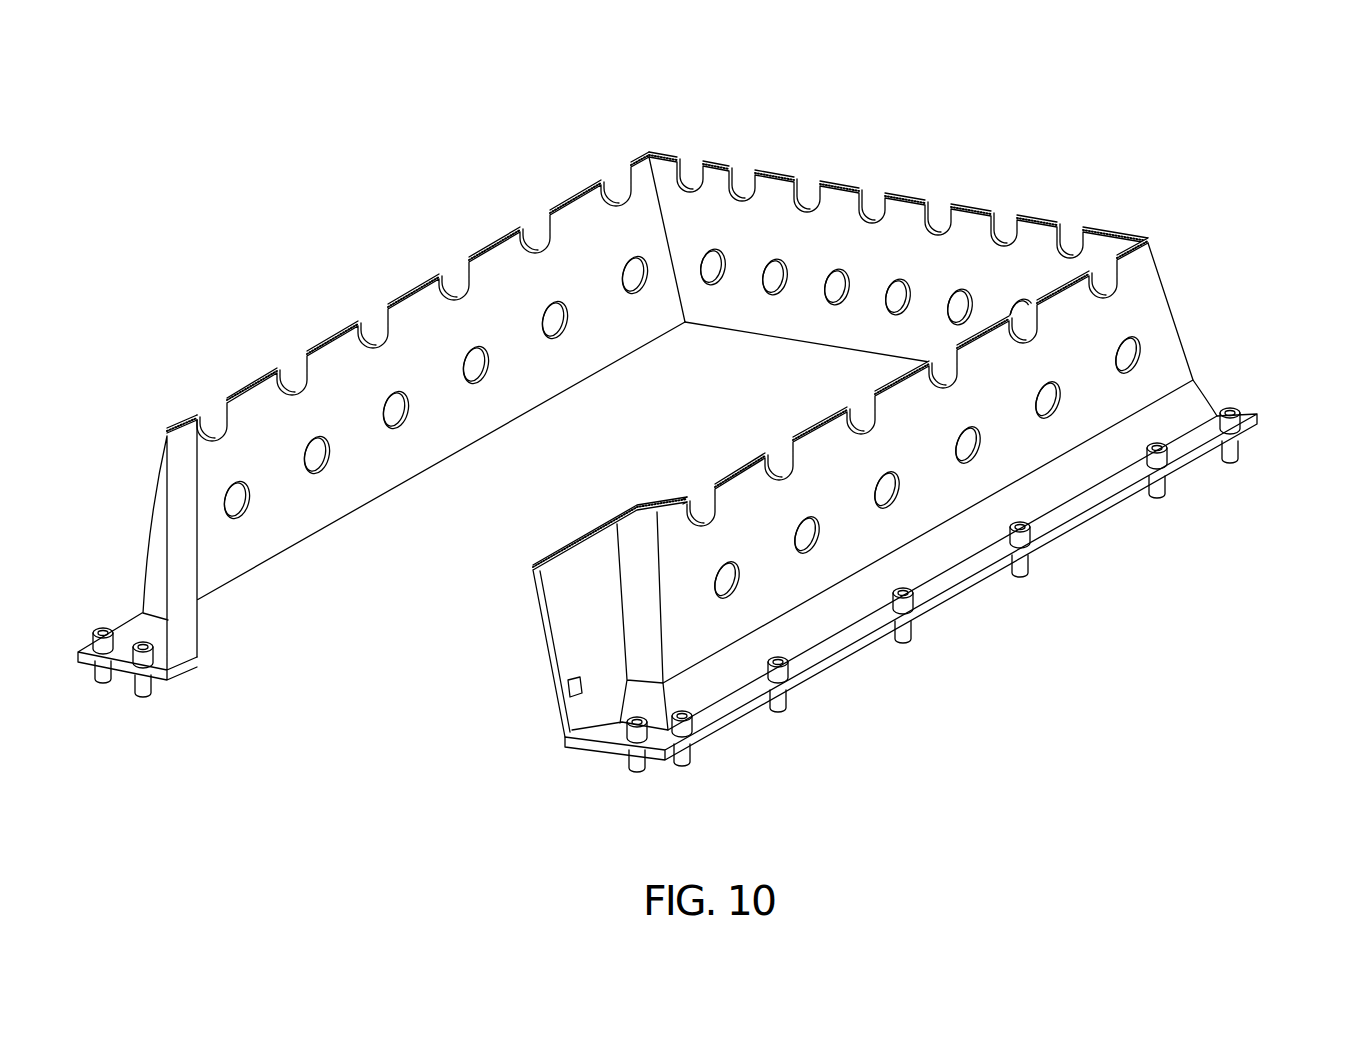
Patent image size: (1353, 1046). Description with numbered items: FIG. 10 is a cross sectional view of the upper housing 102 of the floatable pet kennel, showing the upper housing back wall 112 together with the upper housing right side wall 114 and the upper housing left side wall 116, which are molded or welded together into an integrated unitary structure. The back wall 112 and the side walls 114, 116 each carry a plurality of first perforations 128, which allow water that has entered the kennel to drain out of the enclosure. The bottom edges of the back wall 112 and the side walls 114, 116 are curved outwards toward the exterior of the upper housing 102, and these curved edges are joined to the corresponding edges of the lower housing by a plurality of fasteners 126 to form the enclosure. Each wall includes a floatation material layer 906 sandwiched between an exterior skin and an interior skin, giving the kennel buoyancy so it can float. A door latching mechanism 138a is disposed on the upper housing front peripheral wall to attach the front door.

The upper housing 102 is at (246, 315).
The upper housing back wall 112 is at (843, 230).
The upper housing right side wall 114 is at (1023, 442).
The upper housing left side wall 116 is at (413, 353).
The fastener 126 is at (905, 603).
The first perforation 128 is at (1127, 357).
The door latching mechanism 138a is at (568, 692).
The floatation material layer 906 is at (644, 157).